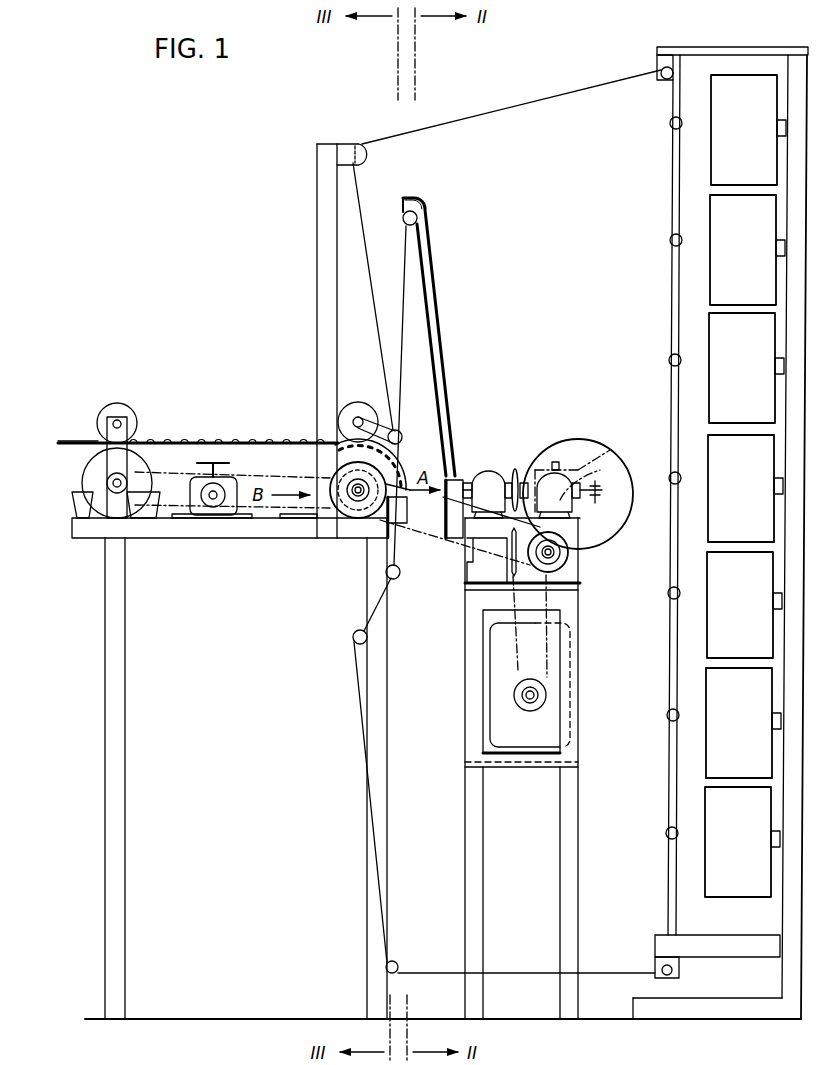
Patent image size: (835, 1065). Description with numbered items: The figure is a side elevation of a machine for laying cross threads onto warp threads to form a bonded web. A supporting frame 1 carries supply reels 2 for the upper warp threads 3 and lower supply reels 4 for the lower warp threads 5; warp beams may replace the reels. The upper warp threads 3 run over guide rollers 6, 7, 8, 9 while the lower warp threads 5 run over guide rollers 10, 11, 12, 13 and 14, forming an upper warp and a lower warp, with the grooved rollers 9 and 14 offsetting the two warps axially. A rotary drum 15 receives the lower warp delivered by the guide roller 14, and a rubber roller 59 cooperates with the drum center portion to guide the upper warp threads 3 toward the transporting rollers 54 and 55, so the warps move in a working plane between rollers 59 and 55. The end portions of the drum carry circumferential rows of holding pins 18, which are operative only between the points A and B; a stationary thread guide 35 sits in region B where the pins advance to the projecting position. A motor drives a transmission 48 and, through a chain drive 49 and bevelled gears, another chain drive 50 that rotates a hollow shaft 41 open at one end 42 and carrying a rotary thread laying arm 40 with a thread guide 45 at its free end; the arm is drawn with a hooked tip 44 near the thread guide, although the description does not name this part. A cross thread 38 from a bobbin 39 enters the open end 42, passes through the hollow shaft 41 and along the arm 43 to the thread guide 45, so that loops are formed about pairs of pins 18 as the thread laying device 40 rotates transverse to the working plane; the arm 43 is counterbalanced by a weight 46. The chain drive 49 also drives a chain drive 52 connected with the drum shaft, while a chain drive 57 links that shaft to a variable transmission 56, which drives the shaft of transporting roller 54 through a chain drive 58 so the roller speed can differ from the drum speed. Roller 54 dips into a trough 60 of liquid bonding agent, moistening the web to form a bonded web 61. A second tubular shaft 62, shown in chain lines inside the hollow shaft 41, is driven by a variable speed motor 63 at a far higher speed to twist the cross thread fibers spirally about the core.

The supporting frame 1 is at (748, 47).
The supply reels 2 is at (682, 126).
The upper warp threads 3 is at (670, 182).
The lower supply reels 4 is at (681, 476).
The lower warp threads 5 is at (373, 846).
The guide roller 6 is at (670, 126).
The guide roller 7 is at (659, 84).
The guide roller 8 is at (370, 156).
The guide roller 9 is at (374, 418).
The guide roller 10 is at (671, 484).
The guide roller 11 is at (662, 966).
The guide roller 12 is at (396, 961).
The guide roller 13 is at (356, 645).
The guide roller 14 is at (386, 571).
The rotary drum 15 is at (396, 500).
The holding pins 18 is at (404, 470).
The stationary thread guide 35 is at (400, 540).
The cross thread 38 is at (402, 350).
The bobbin 39 is at (588, 462).
The rotary thread laying arm 40 is at (448, 346).
The hollow shaft 41 is at (516, 468).
The open end 42 is at (546, 472).
The arm 43 is at (434, 259).
The arm hook 44 is at (418, 199).
The thread guide 45 is at (403, 216).
The weight 46 is at (460, 540).
The transmission 48 is at (523, 744).
The chain drive 49 is at (548, 679).
The chain drive 50 is at (485, 480).
The chain drive 52 is at (490, 560).
The transporting roller 54 is at (84, 525).
The transporting roller 55 is at (126, 420).
The variable transmission 56 is at (222, 482).
The chain drive 57 is at (262, 512).
The chain drive 58 is at (155, 525).
The rubber roller 59 is at (345, 412).
The trough 60 is at (85, 478).
The bonded web 61 is at (70, 440).
The second tubular shaft 62 is at (630, 466).
The variable speed motor 63 is at (616, 450).